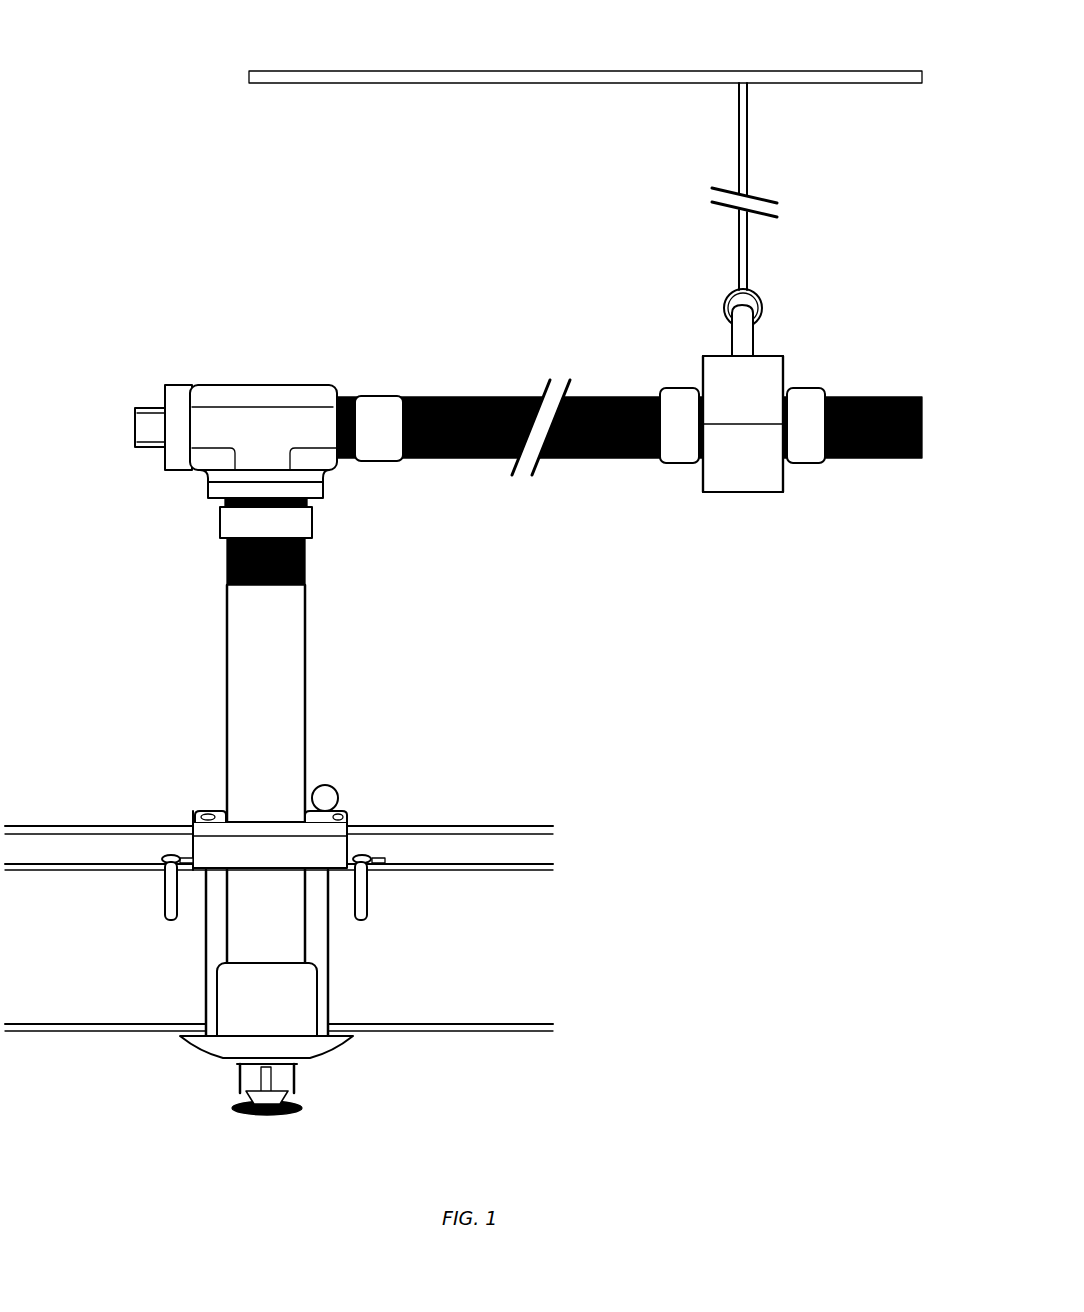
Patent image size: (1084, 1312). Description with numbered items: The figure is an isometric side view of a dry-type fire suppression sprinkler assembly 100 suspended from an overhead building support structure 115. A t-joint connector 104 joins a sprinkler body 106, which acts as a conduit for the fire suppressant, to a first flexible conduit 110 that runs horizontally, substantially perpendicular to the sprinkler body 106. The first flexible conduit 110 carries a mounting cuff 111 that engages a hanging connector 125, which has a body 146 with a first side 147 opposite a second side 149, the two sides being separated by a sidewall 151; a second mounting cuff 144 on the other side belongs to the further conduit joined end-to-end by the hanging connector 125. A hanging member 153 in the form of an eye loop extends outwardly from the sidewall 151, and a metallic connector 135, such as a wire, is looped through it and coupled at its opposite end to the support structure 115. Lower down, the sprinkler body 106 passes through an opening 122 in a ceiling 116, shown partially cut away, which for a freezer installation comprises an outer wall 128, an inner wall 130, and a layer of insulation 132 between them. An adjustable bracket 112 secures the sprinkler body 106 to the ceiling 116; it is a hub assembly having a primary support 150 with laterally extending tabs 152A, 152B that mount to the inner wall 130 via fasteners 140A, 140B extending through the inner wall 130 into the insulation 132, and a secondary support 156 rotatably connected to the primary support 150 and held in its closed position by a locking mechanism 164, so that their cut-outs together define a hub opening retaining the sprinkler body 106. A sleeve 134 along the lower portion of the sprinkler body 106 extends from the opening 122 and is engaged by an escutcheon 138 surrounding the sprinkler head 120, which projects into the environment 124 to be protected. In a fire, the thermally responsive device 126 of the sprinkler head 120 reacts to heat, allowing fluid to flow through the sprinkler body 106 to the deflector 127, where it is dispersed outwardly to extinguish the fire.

The sprinkler assembly 100 is at (152, 182).
The connector 104 is at (259, 369).
The sprinkler body 106 is at (305, 618).
The first flexible conduit 110 is at (452, 396).
The mounting cuff 111 is at (683, 463).
The adjustable bracket 112 is at (200, 801).
The overhead building support structure 115 is at (321, 73).
The ceiling 116 is at (481, 834).
The sprinkler head 120 is at (208, 1112).
The opening 122 is at (320, 939).
The environment 124 is at (456, 1094).
The hanging connector 125 is at (804, 336).
The thermally responsive device 126 is at (257, 1087).
The deflector 127 is at (290, 1113).
The outer wall 128 is at (535, 836).
The inner wall 130 is at (537, 1037).
The layer of insulation 132 is at (481, 921).
The sleeve 134 is at (228, 997).
The metallic connector 135 is at (738, 148).
The escutcheon 138 is at (304, 1058).
The fastener 140A is at (163, 890).
The fastener 140B is at (368, 893).
The mounting cuff 144 is at (806, 388).
The body 146 is at (721, 470).
The first side 147 is at (703, 376).
The second side 149 is at (785, 482).
The primary support 150 is at (212, 811).
The sidewall 151 is at (745, 493).
The laterally extending tab 152A is at (163, 853).
The laterally extending tab 152B is at (363, 853).
The hanging member 153 is at (733, 341).
The secondary support 156 is at (346, 812).
The locking mechanism 164 is at (323, 785).